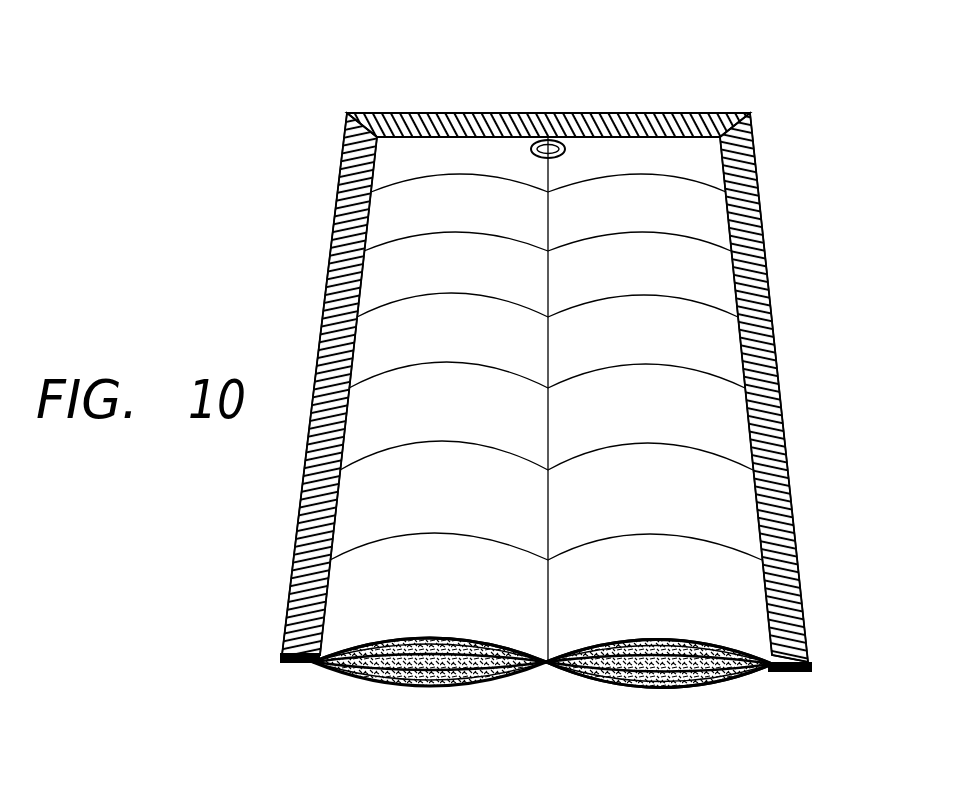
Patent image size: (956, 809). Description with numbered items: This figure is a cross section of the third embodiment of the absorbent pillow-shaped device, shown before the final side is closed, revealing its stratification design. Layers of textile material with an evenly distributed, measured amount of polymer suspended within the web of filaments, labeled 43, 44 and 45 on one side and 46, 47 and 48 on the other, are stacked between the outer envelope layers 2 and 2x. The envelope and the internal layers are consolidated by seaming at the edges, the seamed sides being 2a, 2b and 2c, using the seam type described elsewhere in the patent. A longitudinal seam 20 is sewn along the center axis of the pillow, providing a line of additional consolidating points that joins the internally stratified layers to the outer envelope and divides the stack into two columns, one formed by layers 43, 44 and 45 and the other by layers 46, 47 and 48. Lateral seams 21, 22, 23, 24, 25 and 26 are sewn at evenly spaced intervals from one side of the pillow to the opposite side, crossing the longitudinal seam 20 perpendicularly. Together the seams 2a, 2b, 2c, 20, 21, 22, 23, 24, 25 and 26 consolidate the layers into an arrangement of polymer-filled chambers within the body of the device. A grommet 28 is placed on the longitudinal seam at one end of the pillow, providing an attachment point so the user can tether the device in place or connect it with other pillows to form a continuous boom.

The envelope 2 is at (806, 622).
The side seam 2a is at (334, 233).
The side seam 2b is at (497, 112).
The side seam 2c is at (768, 232).
The outer envelope layer 2x is at (730, 690).
The longitudinal seam 20 is at (542, 665).
The lateral seam 21 is at (415, 178).
The lateral seam 22 is at (413, 237).
The lateral seam 23 is at (407, 300).
The lateral seam 24 is at (402, 368).
The lateral seam 25 is at (393, 448).
The lateral seam 26 is at (383, 540).
The grommet 28 is at (566, 151).
The layer of polymer suspended in textile material 43 is at (358, 682).
The layer of polymer suspended in textile material 44 is at (398, 668).
The layer of polymer suspended in textile material 45 is at (438, 688).
The layer of polymer suspended in textile material 46 is at (688, 650).
The layer of polymer suspended in textile material 47 is at (662, 667).
The layer of polymer suspended in textile material 48 is at (612, 692).